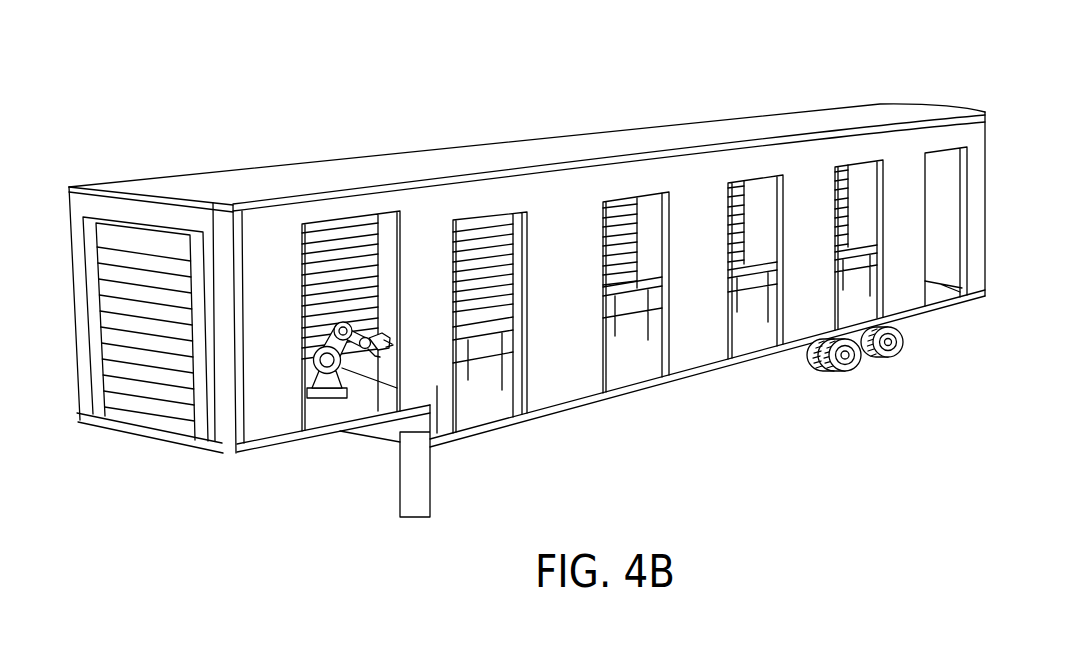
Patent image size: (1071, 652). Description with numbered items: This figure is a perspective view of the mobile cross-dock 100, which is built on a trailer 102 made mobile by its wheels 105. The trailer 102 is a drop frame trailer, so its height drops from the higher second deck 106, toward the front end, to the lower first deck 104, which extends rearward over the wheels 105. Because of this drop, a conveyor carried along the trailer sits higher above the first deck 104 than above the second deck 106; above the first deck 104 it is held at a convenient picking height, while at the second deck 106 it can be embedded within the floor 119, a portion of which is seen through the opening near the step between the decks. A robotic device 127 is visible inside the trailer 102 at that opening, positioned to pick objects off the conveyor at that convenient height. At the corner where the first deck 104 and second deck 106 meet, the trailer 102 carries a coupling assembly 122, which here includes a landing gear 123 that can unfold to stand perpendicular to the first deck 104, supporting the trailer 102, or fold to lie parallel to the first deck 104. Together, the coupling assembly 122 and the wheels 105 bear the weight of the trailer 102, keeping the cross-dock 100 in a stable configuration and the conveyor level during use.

The mobile cross-dock 100 is at (243, 78).
The trailer 102 is at (430, 148).
The first deck 104 is at (712, 388).
The wheels 105 is at (897, 353).
The second deck 106 is at (208, 470).
The floor 119 is at (380, 388).
The coupling assembly 122 is at (303, 489).
The landing gear 123 is at (400, 492).
The robotic device 127 is at (346, 321).